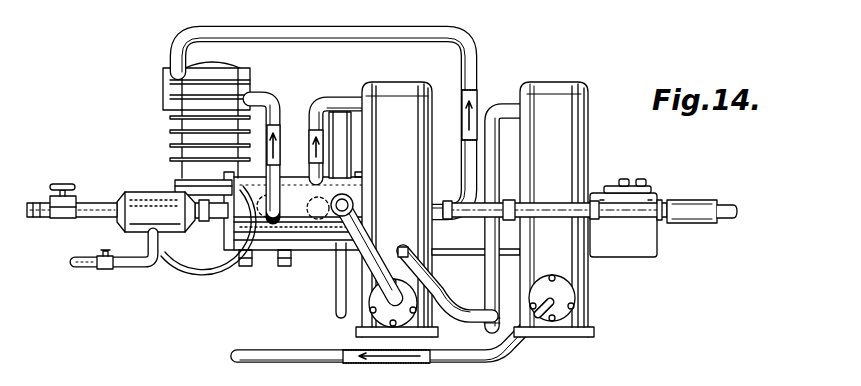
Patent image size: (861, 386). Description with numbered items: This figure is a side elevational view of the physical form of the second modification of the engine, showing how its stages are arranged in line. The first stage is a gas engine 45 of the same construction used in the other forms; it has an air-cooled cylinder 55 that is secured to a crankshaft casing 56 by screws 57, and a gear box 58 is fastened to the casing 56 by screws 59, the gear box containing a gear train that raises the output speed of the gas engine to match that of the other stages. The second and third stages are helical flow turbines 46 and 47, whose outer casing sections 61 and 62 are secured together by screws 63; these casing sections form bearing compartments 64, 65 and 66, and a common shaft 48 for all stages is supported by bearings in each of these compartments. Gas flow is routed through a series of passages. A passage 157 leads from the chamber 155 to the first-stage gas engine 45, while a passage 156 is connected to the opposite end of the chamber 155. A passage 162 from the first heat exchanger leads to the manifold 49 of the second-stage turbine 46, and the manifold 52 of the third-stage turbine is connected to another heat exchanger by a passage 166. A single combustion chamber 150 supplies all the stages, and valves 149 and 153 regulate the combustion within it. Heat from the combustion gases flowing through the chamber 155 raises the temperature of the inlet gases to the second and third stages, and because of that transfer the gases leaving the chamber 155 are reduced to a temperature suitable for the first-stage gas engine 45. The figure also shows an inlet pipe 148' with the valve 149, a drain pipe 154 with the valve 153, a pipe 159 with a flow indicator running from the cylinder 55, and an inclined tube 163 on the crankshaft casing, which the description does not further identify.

The gas engine 45 is at (242, 68).
The helical flow turbine 46 is at (400, 75).
The helical flow turbine 47 is at (547, 75).
The common shaft 48 is at (721, 200).
The manifold 49 is at (350, 133).
The manifold 52 is at (487, 107).
The air-cooled cylinder 55 is at (183, 116).
The crankshaft casing 56 is at (208, 275).
The screws 57 is at (178, 178).
The gear box 58 is at (284, 267).
The screws 59 is at (248, 267).
The outer casing section 61 is at (583, 83).
The outer casing section 62 is at (587, 300).
The screws 63 is at (548, 202).
The bearing compartment 64 is at (318, 262).
The bearing compartment 65 is at (479, 262).
The bearing compartment 66 is at (660, 256).
The inlet pipe 148' is at (72, 185).
The valve 149 is at (66, 220).
The combustion chamber 150 is at (130, 186).
The valve 153 is at (106, 256).
The drain pipe 154 is at (152, 268).
The chamber 155 is at (384, 179).
The passage 156 is at (175, 190).
The passage 157 is at (446, 28).
The transfer pipe with flow indicator 159 is at (277, 101).
The passage 162 is at (322, 101).
The inclined connecting tube 163 is at (358, 194).
The passage 166 is at (451, 320).